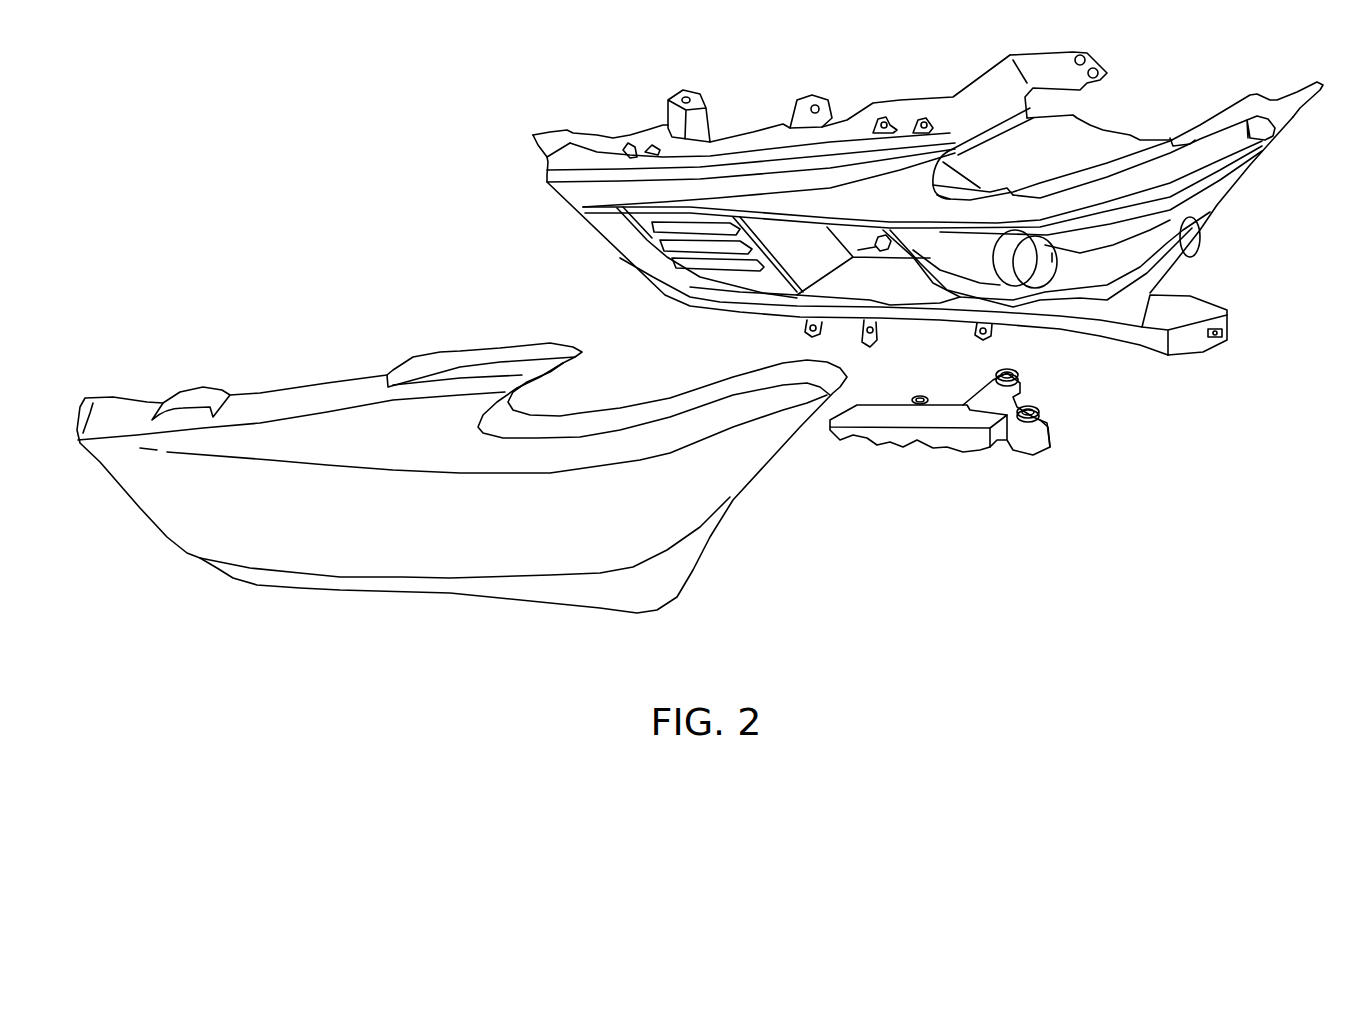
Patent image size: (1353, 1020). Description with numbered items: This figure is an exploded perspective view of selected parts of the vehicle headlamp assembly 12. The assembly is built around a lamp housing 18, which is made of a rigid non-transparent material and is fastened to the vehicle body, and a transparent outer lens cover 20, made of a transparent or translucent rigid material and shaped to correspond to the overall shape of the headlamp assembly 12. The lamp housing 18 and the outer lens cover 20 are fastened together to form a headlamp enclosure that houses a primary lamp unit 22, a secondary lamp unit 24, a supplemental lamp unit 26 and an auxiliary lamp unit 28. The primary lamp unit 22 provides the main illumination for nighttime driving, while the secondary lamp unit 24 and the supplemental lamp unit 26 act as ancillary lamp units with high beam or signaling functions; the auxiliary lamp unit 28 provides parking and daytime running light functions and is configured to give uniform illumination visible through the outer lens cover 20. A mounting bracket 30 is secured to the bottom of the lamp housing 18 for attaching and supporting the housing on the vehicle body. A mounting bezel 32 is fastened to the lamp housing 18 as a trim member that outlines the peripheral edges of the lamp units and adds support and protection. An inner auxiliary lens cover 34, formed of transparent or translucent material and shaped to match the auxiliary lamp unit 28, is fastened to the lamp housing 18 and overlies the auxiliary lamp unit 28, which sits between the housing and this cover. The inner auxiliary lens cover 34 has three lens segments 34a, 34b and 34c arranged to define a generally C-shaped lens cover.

The vehicle headlamp assembly 12 is at (338, 147).
The lamp housing 18 is at (923, 94).
The transparent outer lens cover 20 is at (136, 511).
The primary lamp unit 22 is at (998, 270).
The secondary lamp unit 24 is at (893, 270).
The supplemental lamp unit 26 is at (715, 272).
The auxiliary lamp unit 28 is at (598, 288).
The mounting bracket 30 is at (957, 450).
The mounting bezel 32 is at (1150, 177).
The inner auxiliary lens cover 34 is at (600, 254).
The lens segment 34a is at (750, 190).
The lens segment 34b is at (598, 222).
The lens segment 34c is at (672, 287).